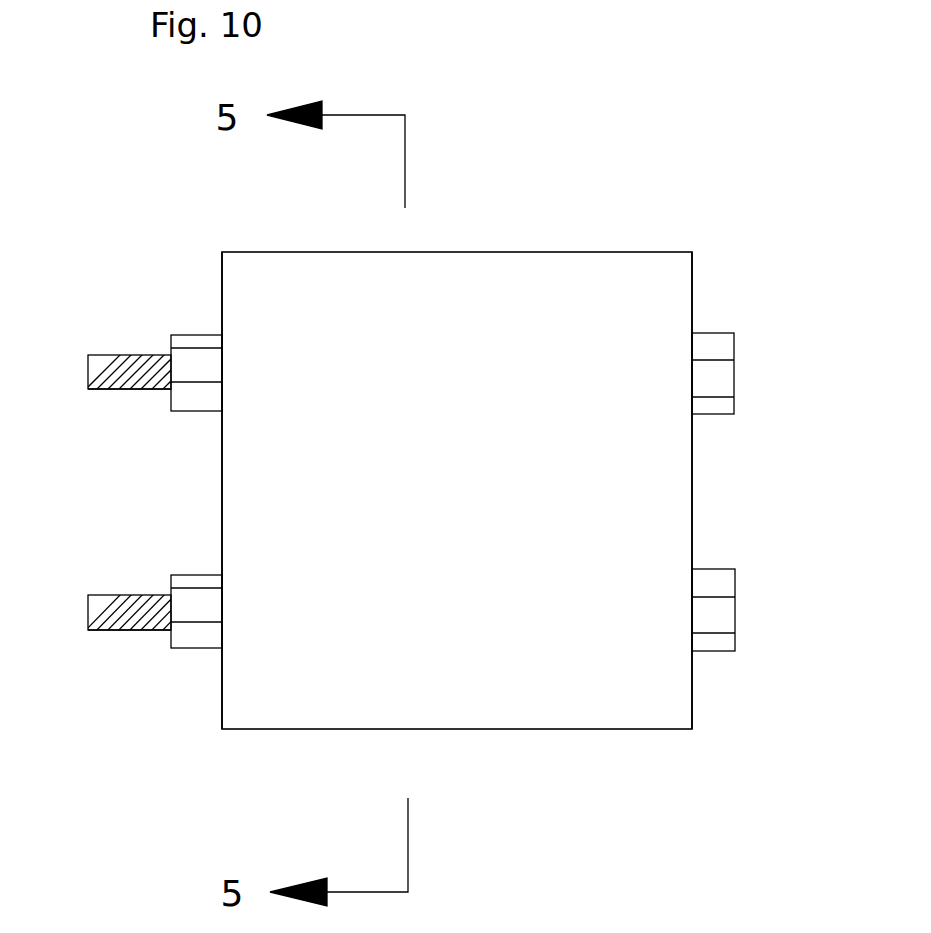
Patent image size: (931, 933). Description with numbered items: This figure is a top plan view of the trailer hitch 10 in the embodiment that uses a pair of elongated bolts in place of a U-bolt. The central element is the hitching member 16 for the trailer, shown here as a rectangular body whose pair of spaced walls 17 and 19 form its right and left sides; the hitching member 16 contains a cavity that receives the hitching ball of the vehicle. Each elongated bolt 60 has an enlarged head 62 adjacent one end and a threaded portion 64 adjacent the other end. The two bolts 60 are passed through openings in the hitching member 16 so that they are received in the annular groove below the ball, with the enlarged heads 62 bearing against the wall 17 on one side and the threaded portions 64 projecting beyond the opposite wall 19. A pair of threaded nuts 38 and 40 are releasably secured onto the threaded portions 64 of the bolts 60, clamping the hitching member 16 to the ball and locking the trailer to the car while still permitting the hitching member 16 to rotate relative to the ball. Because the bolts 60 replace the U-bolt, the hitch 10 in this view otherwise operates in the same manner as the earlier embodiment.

The trailer hitch 10 is at (151, 338).
The hitching member 16 is at (512, 729).
The wall 17 is at (692, 309).
The wall 19 is at (222, 480).
The threaded nut 38 is at (187, 335).
The threaded nut 40 is at (183, 648).
The elongated bolt 60 is at (88, 372).
The enlarged head 62 is at (734, 375).
The threaded portion 64 is at (132, 389).